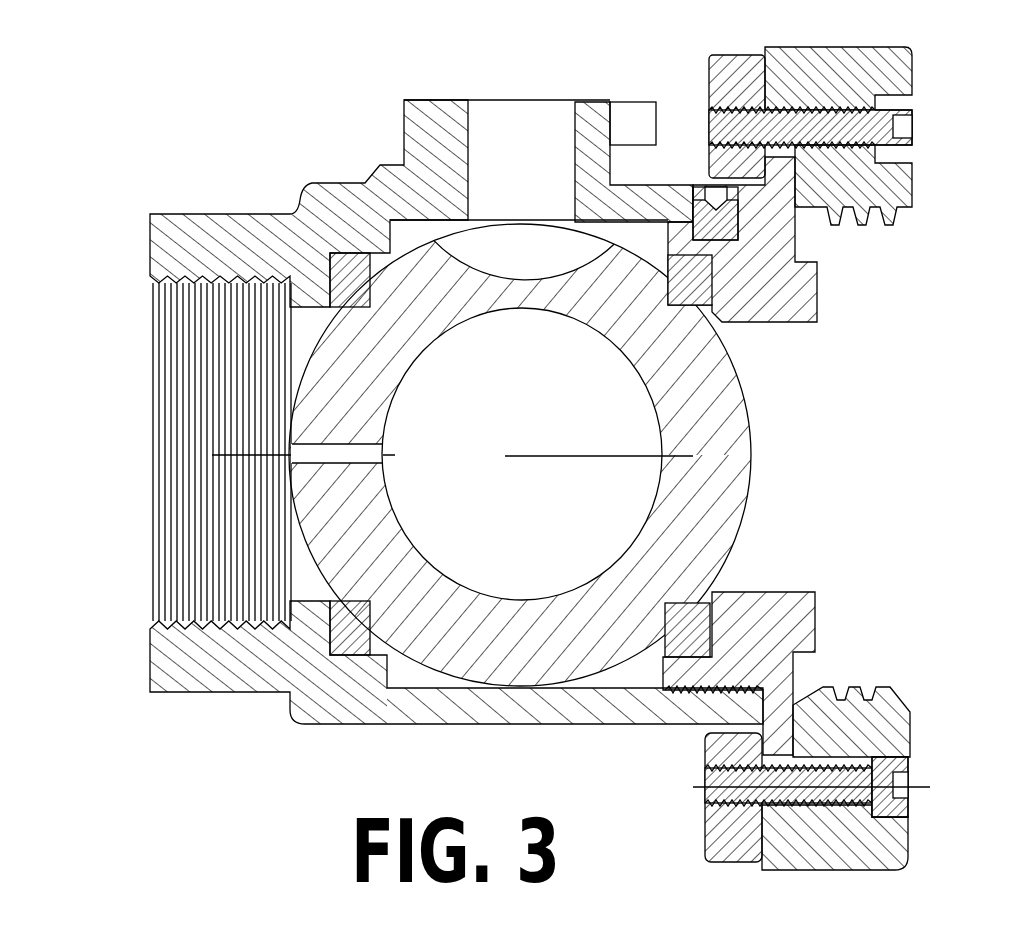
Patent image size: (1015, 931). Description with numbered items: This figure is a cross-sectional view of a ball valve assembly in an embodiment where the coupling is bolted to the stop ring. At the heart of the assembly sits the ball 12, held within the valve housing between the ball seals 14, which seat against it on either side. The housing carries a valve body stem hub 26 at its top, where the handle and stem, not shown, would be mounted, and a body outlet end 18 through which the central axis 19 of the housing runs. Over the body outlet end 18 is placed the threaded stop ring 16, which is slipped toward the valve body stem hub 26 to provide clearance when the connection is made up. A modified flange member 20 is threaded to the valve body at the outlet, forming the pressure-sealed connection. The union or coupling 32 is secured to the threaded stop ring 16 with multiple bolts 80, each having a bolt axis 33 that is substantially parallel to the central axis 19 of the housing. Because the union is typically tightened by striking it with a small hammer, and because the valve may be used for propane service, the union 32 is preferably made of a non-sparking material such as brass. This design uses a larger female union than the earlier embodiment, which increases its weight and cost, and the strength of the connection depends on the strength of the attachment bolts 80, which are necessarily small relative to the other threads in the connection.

The ball 12 is at (538, 661).
The ball seals 14 is at (692, 640).
The threaded stop ring 16 is at (735, 78).
The body outlet end 18 is at (625, 205).
The central axis 19 is at (447, 453).
The flange member 20 is at (783, 632).
The valve body stem hub 26 is at (592, 128).
The union 32 is at (888, 197).
The bolt axis 33 is at (940, 787).
The bolts 80 is at (830, 122).